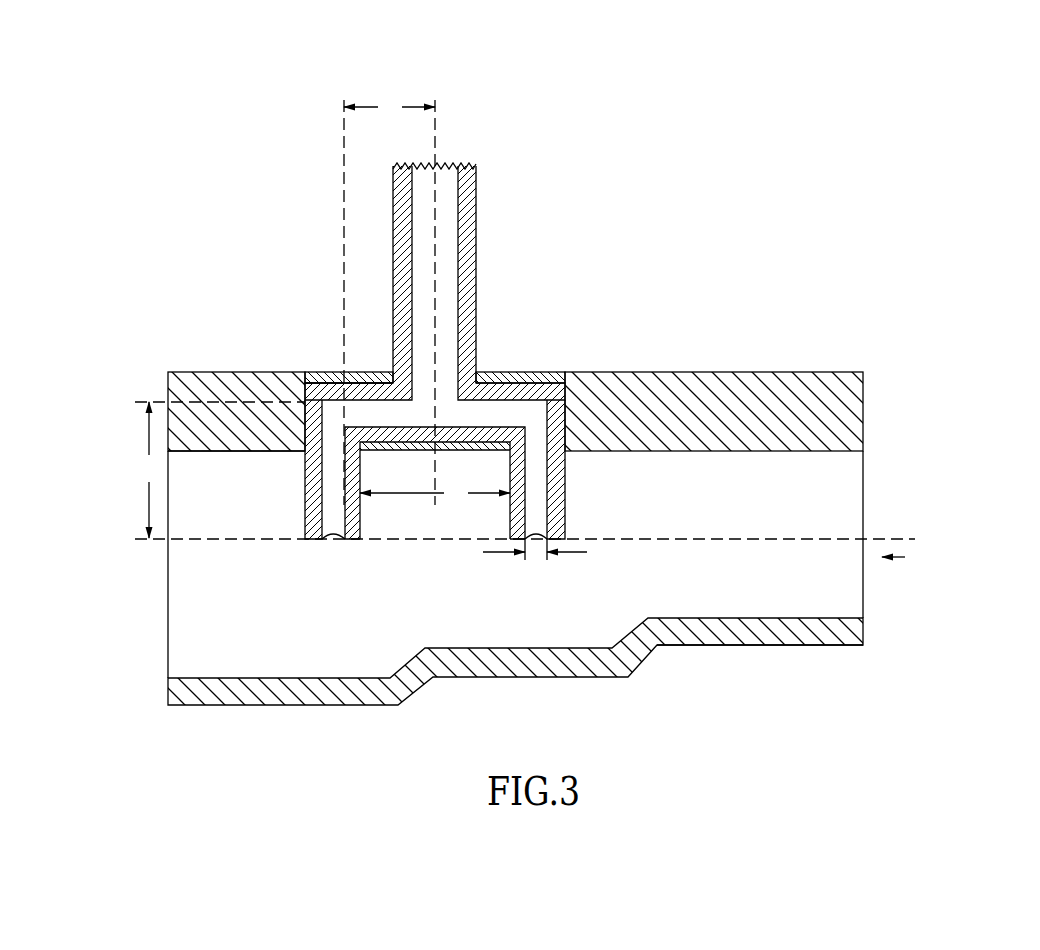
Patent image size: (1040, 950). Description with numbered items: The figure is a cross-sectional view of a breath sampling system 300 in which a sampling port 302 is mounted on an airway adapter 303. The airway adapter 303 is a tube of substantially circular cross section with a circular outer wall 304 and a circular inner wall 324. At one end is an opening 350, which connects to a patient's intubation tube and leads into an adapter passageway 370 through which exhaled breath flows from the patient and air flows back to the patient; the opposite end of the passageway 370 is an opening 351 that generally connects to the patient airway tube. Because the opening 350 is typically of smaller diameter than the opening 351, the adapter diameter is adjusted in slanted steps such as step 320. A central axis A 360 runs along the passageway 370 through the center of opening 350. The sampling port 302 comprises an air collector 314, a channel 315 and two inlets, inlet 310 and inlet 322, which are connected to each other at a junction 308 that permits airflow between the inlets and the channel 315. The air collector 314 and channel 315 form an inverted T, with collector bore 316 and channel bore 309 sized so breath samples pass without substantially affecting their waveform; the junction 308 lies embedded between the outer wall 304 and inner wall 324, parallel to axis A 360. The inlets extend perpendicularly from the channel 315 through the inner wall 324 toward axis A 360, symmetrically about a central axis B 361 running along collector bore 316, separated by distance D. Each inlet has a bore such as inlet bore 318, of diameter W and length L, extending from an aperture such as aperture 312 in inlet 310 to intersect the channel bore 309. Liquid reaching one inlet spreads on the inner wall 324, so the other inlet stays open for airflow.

The breath sampling system 300 is at (529, 365).
The sampling port 302 is at (423, 362).
The airway adapter 303 is at (458, 461).
The circular outer wall 304 is at (237, 372).
The junction 308 is at (477, 368).
The channel bore 309 is at (383, 412).
The inlet 310 is at (305, 480).
The aperture 312 is at (335, 547).
The air collector 314 is at (393, 203).
The channel 315 is at (385, 370).
The collector bore 316 is at (445, 260).
The inlet bore 318 is at (333, 462).
The step 320 is at (410, 660).
The inlet 322 is at (565, 478).
The circular inner wall 324 is at (200, 453).
The opening 350 is at (905, 557).
The opening 351 is at (137, 492).
The central axis A 360 is at (912, 525).
The central axis B 361 is at (448, 80).
The adapter passageway 370 is at (818, 580).